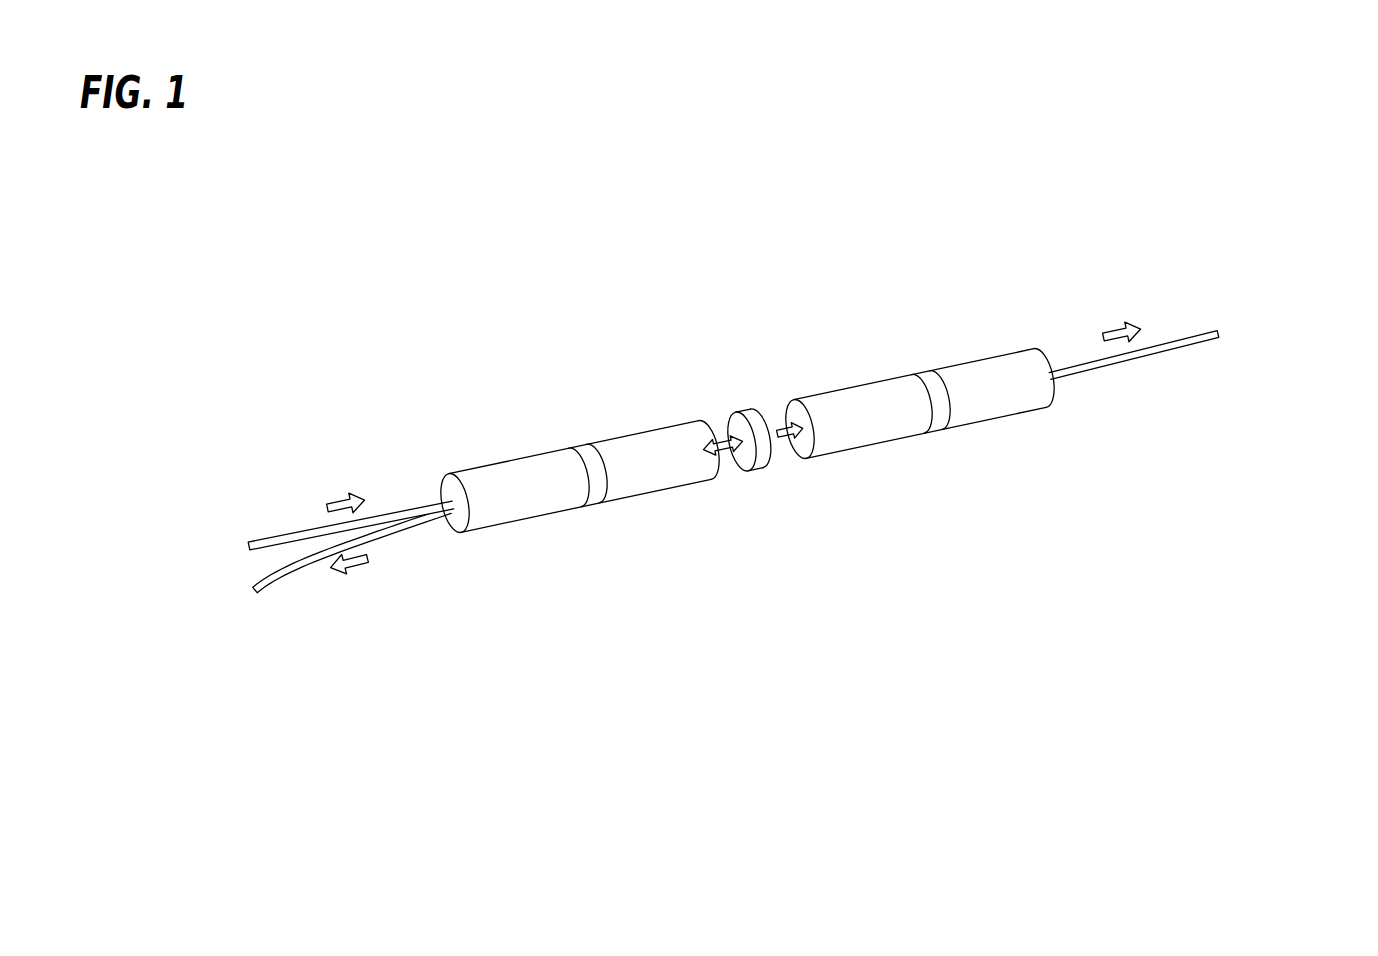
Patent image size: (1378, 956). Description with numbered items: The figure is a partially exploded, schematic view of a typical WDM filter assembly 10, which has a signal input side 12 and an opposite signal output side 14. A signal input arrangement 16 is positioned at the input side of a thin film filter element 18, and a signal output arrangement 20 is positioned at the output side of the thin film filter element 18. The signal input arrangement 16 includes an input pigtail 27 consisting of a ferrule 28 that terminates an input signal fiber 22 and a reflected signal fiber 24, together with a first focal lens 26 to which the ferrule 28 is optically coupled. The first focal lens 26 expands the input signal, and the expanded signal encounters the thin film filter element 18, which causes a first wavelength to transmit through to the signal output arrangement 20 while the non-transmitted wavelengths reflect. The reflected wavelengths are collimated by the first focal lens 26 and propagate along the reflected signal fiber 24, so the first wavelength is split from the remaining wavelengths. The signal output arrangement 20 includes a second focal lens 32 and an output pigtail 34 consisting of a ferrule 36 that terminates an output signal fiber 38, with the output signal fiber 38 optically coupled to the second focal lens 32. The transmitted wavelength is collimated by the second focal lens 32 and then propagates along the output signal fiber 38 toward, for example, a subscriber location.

The WDM filter assembly 10 is at (948, 248).
The signal input side 12 is at (190, 535).
The signal output side 14 is at (1268, 315).
The signal input arrangement 16 is at (703, 497).
The thin film filter element 18 is at (758, 398).
The signal output arrangement 20 is at (788, 398).
The input signal fiber 22 is at (280, 535).
The reflected signal fiber 24 is at (283, 575).
The first focal lens 26 is at (620, 454).
The input pigtail 27 is at (423, 475).
The ferrule 28 is at (502, 505).
The second focal lens 32 is at (830, 438).
The output pigtail 34 is at (1060, 403).
The ferrule 36 is at (1017, 364).
The output signal fiber 38 is at (1168, 349).